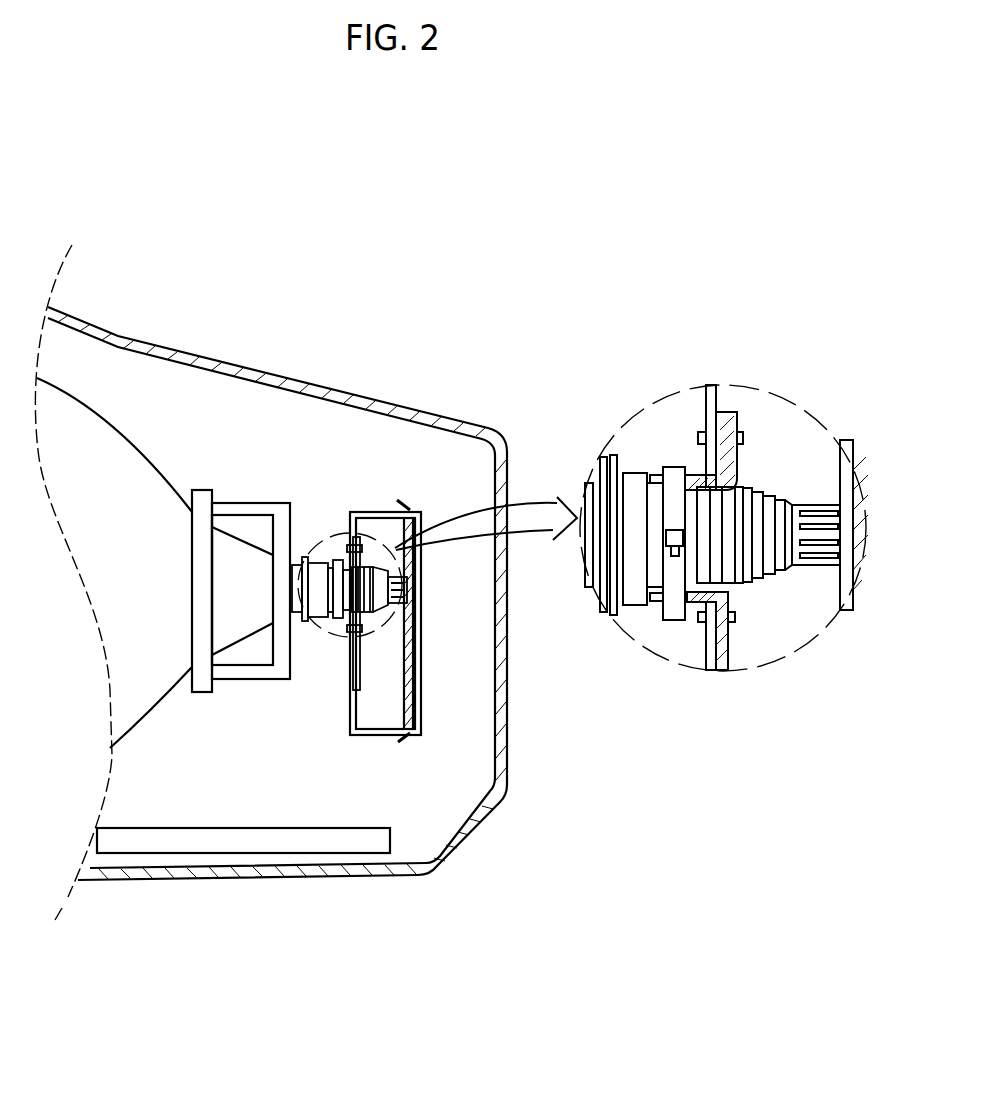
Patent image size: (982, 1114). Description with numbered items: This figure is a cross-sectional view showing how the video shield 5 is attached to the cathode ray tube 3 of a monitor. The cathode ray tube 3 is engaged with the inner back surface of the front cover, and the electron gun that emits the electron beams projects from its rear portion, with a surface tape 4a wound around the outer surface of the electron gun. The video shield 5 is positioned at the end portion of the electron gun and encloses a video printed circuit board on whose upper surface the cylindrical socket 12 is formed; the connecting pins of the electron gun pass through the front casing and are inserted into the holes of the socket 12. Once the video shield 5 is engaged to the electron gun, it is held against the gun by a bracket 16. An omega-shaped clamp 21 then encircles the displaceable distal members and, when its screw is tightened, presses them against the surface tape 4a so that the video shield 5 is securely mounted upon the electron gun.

The cathode ray tube 3 is at (140, 478).
The surface tape 4a is at (396, 573).
The video shield 5 is at (433, 500).
The socket 12 is at (838, 512).
The bracket 16 is at (728, 412).
The clamp 21 is at (676, 605).